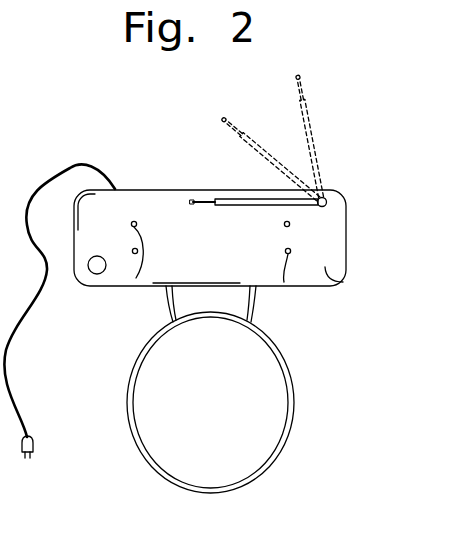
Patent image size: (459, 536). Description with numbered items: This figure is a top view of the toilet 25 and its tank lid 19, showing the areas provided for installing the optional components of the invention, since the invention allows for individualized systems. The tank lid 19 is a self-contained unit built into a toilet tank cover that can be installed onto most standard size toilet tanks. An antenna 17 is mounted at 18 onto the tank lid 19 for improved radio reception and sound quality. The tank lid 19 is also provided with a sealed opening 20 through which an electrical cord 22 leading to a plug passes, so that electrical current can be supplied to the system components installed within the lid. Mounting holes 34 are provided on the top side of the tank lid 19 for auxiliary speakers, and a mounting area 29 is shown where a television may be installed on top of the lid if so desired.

The antenna 17 is at (313, 133).
The antenna mounting point 18 is at (331, 201).
The tank lid 19 is at (326, 287).
The sealed opening 20 is at (129, 180).
The electrical cord 22 is at (10, 386).
The toilet 25 is at (290, 391).
The mounting area 29 is at (95, 274).
The mounting holes 34 is at (135, 254).